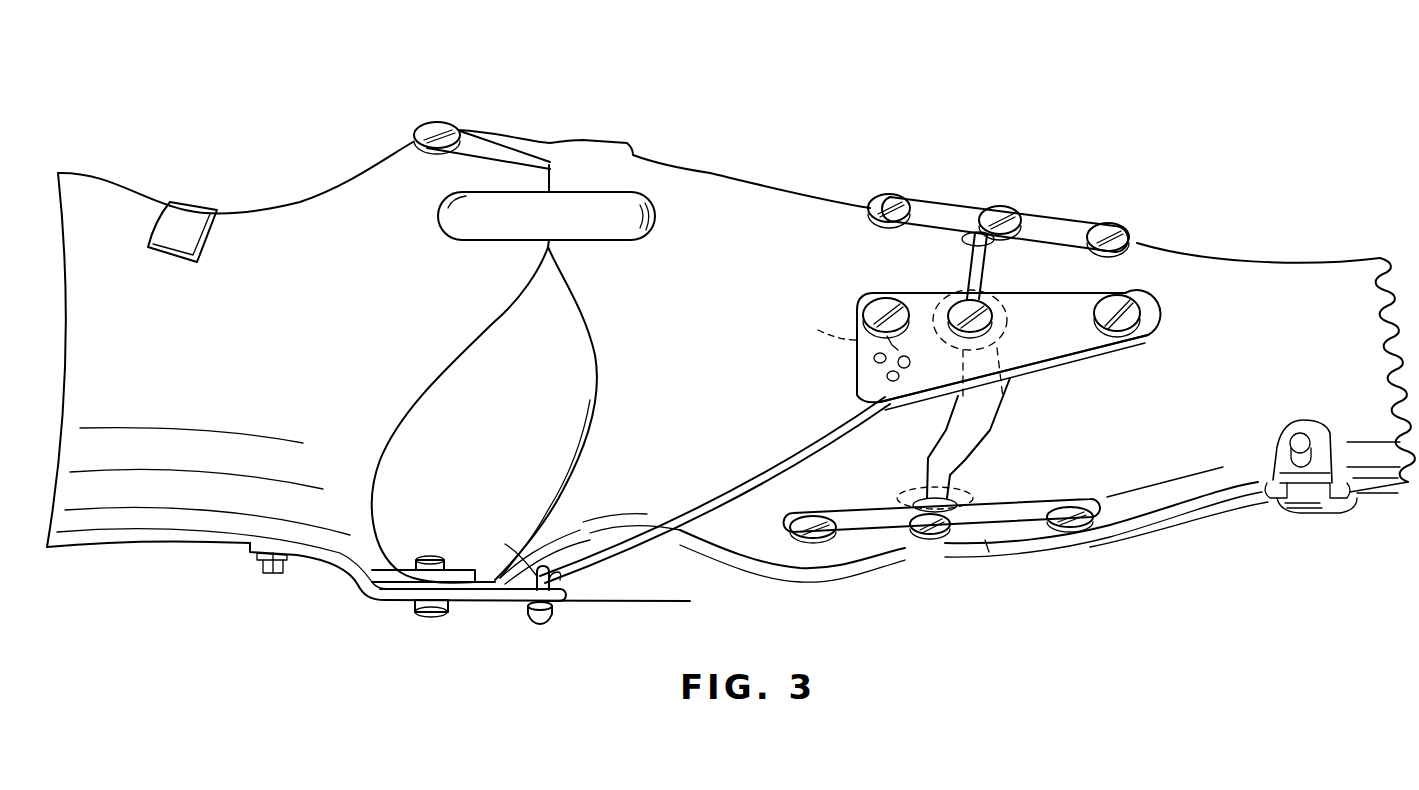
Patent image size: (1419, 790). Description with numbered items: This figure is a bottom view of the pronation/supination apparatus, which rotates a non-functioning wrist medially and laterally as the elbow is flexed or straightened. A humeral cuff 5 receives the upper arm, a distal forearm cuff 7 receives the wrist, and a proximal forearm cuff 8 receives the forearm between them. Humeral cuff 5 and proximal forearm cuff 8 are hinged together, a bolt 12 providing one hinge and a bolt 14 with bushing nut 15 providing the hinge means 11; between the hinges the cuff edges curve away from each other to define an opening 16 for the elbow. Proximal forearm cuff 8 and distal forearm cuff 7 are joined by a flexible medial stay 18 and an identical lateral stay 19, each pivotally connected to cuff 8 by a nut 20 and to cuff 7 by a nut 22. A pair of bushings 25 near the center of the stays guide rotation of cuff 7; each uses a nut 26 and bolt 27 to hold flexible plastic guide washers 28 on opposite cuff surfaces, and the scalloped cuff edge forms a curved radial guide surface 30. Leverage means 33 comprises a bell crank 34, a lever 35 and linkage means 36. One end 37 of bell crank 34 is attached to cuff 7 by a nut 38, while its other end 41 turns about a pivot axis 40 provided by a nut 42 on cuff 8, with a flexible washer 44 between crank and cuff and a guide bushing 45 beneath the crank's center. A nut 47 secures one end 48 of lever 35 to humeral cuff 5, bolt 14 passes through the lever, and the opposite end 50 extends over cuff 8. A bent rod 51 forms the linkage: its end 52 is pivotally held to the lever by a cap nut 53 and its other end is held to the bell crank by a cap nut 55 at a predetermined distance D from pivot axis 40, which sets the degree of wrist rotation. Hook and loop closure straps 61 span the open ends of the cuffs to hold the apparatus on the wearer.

The humeral cuff 5 is at (195, 518).
The distal forearm cuff 7 is at (1220, 540).
The proximal forearm cuff 8 is at (697, 186).
The hinge means 11 is at (464, 626).
The bolt 12 is at (444, 124).
The bolt 14 is at (430, 618).
The bushing nut 15 is at (430, 556).
The opening 16 is at (492, 452).
The medial stay 18 is at (851, 537).
The lateral stay 19 is at (947, 197).
The nut 20 is at (882, 196).
The nut 22 is at (1111, 228).
The bushings 25 is at (921, 584).
The nut 26 is at (1012, 210).
The bolt 27 is at (968, 466).
The guide washers 28 is at (968, 244).
The curved radial guide surface 30 is at (943, 427).
The leverage means 33 is at (804, 425).
The bell crank 34 is at (1082, 347).
The lever 35 is at (378, 606).
The linkage means 36 is at (790, 470).
The end of bell crank 37 is at (1097, 295).
The nut 38 is at (1140, 313).
The pivot axis 40 is at (985, 276).
The end of bell crank 41 is at (866, 381).
The nut 42 is at (876, 306).
The flexible washer 44 is at (820, 326).
The guide bushing 45 is at (992, 326).
The nut 47 is at (283, 565).
The end of lever 48 is at (582, 578).
The end of lever 50 is at (566, 592).
The rod 51 is at (680, 510).
The rod end 52 is at (536, 566).
The cap nut 53 is at (541, 629).
The cap nut 55 is at (908, 364).
The hook and loop closure strap 61 is at (191, 216).
The distance D is at (855, 345).